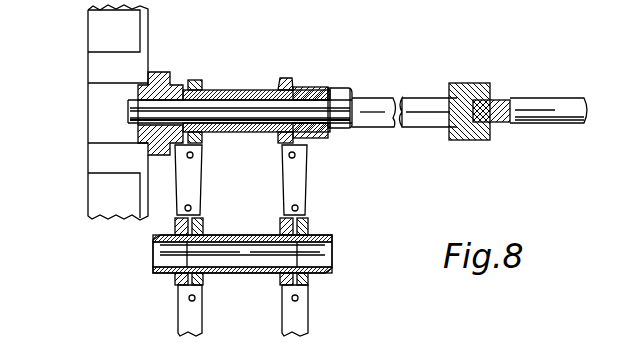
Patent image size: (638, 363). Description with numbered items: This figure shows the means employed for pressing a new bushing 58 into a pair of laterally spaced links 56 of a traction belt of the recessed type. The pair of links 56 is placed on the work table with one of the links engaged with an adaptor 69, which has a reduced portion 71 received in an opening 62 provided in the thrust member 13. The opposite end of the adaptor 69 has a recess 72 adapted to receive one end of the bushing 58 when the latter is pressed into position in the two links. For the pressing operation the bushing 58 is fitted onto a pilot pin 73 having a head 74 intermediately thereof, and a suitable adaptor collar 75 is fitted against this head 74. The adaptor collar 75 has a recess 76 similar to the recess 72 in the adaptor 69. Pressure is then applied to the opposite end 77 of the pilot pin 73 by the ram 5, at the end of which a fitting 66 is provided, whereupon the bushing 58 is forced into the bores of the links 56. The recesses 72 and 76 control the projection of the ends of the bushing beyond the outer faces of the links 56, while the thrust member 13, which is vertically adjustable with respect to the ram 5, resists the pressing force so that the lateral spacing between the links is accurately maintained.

The thrust member 13 is at (80, 33).
The opening 62 is at (108, 127).
The adaptor 69 is at (163, 72).
The reduced portion 71 is at (140, 83).
The recess 72 is at (185, 88).
The bushing 58 is at (237, 92).
The pilot pin 73 is at (242, 113).
The recess 76 is at (303, 87).
The adaptor collar 75 is at (320, 87).
The head 74 is at (340, 97).
The opposite end 77 is at (423, 118).
The fitting 66 is at (471, 93).
The ram 5 is at (547, 105).
The links 56 is at (188, 190).